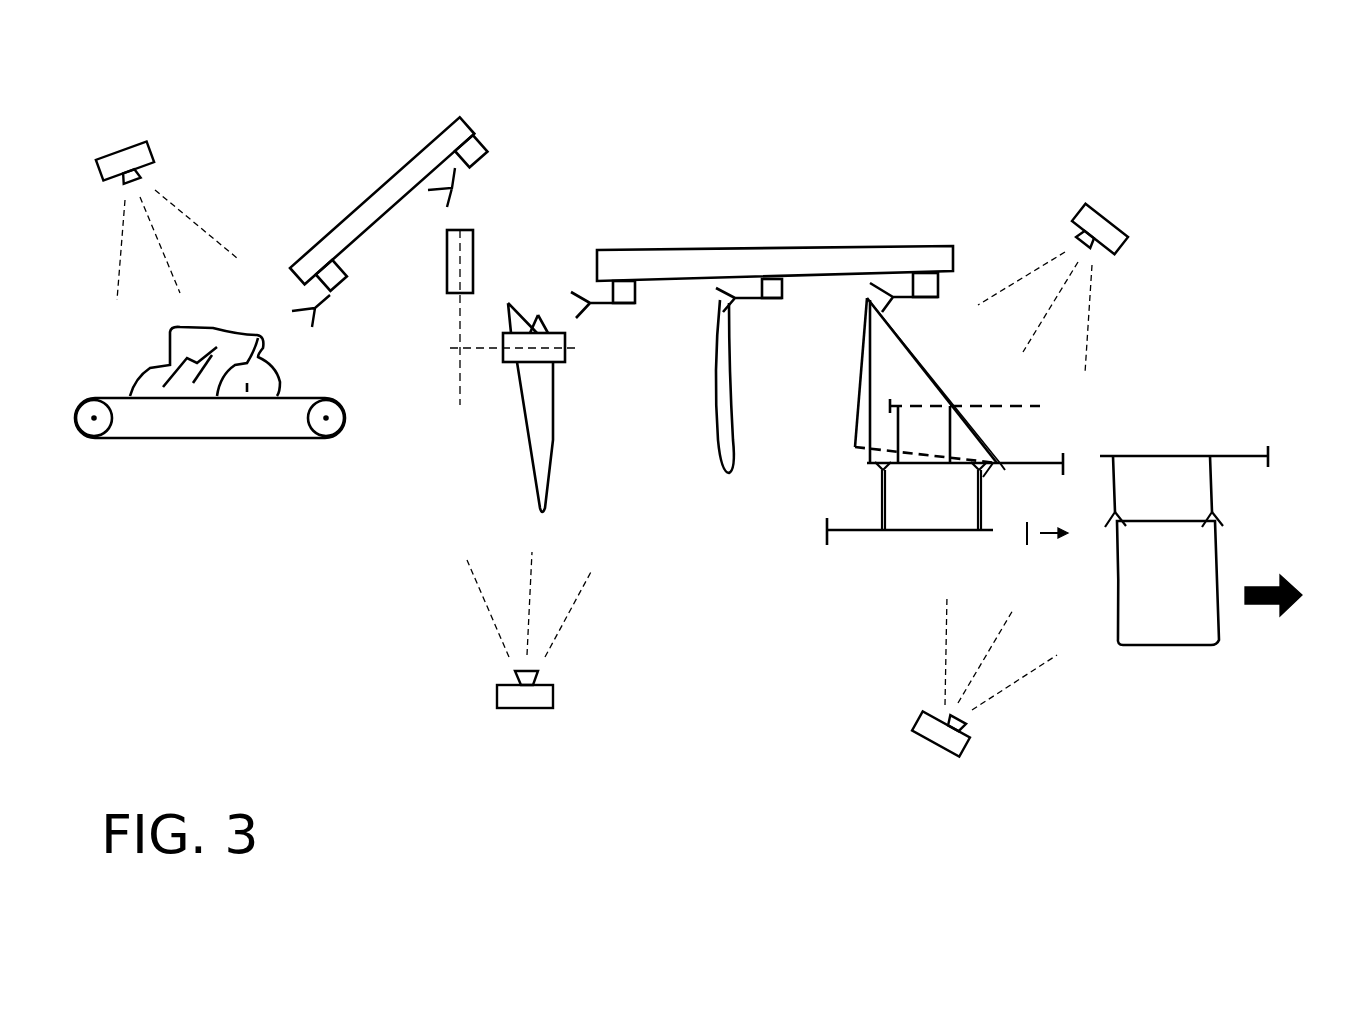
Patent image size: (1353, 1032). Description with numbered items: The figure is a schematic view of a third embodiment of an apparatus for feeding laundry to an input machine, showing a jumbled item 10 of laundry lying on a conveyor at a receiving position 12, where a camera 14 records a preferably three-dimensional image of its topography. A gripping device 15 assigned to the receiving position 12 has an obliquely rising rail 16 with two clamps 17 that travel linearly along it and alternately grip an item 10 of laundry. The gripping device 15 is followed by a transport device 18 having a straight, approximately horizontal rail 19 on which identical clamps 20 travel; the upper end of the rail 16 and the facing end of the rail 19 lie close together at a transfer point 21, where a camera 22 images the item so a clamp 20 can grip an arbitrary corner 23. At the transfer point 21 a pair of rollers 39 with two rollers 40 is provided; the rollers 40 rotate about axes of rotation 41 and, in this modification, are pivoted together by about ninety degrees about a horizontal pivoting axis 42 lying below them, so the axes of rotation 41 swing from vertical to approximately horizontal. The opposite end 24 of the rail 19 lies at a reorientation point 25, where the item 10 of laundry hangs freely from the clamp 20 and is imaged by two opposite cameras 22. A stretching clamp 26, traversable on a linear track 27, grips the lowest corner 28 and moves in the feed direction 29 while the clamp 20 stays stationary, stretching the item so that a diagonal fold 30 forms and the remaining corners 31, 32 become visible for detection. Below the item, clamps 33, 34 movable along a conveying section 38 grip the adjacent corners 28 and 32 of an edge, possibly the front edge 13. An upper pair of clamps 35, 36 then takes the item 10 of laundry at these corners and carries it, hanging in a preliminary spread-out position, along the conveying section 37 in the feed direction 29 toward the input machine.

The item of laundry 10 is at (243, 385).
The receiving position 12 is at (200, 458).
The front edge 13 is at (1168, 520).
The camera 14 is at (150, 150).
The gripping device 15 is at (403, 231).
The rail 16 is at (333, 245).
The clamp 17 is at (452, 192).
The transport device 18 is at (788, 203).
The rail 19 is at (648, 265).
The clamp 20 is at (593, 306).
The transfer point 21 is at (495, 293).
The camera 22 is at (1112, 224).
The corner 23 is at (514, 300).
The end of the rail 24 is at (940, 262).
The reorientation point 25 is at (1012, 512).
The stretching clamp 26 is at (990, 472).
The linear track 27 is at (1040, 470).
The corner 28 is at (545, 508).
The feed direction 29 is at (1270, 610).
The diagonal fold 30 is at (938, 385).
The corner 31 is at (852, 444).
The corner 32 is at (865, 463).
The clamp 33 is at (972, 473).
The clamp 34 is at (886, 478).
The clamp 35 is at (949, 472).
The clamp 36 is at (899, 470).
The conveying section 37 is at (1034, 405).
The conveying section 38 is at (851, 533).
The pair of rollers 39 is at (434, 263).
The roller 40 is at (474, 267).
The axis of rotation 41 is at (460, 302).
The pivoting axis 42 is at (460, 378).